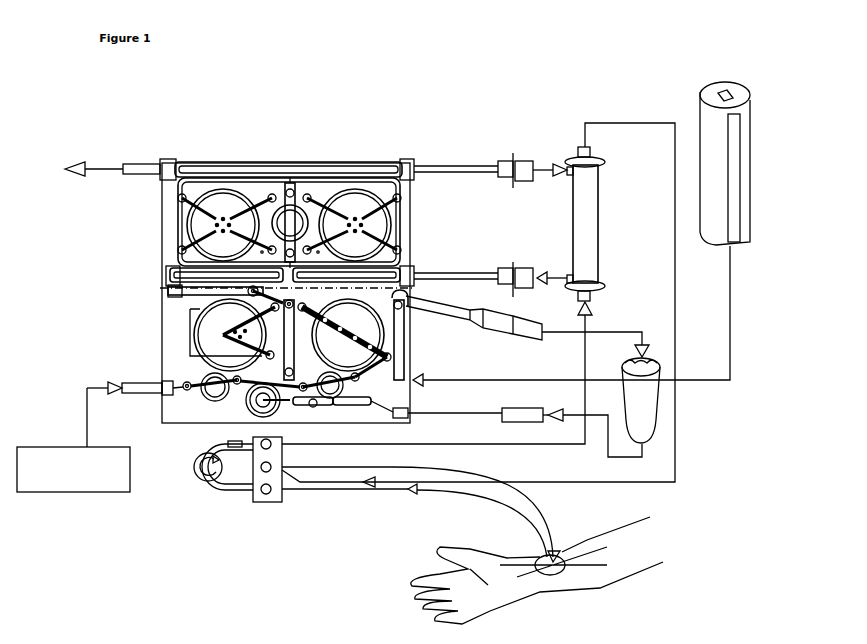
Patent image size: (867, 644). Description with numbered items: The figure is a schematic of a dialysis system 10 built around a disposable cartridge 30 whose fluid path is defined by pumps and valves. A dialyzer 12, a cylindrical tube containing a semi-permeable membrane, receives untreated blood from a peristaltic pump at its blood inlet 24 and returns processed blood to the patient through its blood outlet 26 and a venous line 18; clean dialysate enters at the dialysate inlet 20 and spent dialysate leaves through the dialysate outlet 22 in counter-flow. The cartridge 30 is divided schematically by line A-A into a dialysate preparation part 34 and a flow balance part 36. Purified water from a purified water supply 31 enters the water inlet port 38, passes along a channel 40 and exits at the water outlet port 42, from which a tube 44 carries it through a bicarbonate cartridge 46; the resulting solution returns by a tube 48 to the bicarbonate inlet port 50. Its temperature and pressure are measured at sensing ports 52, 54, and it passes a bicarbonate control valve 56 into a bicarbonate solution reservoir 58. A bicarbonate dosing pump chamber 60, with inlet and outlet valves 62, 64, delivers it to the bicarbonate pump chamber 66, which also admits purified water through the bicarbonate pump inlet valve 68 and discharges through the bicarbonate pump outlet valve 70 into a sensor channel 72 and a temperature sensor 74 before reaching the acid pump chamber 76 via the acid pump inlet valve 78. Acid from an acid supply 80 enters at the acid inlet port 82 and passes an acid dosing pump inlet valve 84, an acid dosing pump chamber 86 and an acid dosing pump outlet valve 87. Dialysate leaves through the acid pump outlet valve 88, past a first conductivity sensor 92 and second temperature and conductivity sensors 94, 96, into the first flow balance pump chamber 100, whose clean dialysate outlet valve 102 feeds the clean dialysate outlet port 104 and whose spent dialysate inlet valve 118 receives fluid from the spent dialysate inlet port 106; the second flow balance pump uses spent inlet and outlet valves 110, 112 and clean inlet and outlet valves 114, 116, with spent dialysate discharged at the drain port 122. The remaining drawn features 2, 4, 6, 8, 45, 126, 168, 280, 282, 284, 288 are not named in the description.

The patient arm 2 is at (537, 570).
The blood treatment system 4 is at (547, 444).
The blood pump 6 is at (203, 470).
The blood return line 8 is at (505, 500).
The dialysis system 10 is at (349, 165).
The dialyzer 12 is at (599, 250).
The venous line 18 is at (555, 506).
The dialysate solution inlet 20 is at (570, 173).
The dialysate solution outlet 22 is at (570, 275).
The blood inlet 24 is at (591, 297).
The blood outlet 26 is at (591, 152).
The cartridge 30 is at (162, 355).
The purified water supply 31 is at (745, 133).
The dialysate preparation part of the cartridge 34 is at (166, 402).
The flow balance part of the cartridge 36 is at (162, 219).
The water inlet port 38 is at (424, 380).
The channel 40 is at (404, 343).
The water outlet port 42 is at (406, 298).
The tube 44 is at (520, 320).
The column 45 is at (404, 322).
The bicarbonate cartridge 46 is at (657, 398).
The tube 48 is at (472, 412).
The bicarbonate inlet port 50 is at (410, 418).
The sensing port 52 is at (380, 412).
The sensing port 54 is at (330, 406).
The bicarbonate control valve 56 is at (296, 406).
The bicarbonate solution reservoir 58 is at (258, 417).
The bicarbonate dosing pump chamber 60 is at (404, 400).
The bicarbonate dosing pump inlet valve 62 is at (303, 384).
The bicarbonate dosing pump outlet valve 64 is at (404, 393).
The bicarbonate pump chamber 66 is at (386, 337).
The bicarbonate pump inlet valve 68 is at (404, 355).
The bicarbonate pump outlet valve 70 is at (302, 308).
The sensor channel 72 is at (289, 342).
The temperature sensor 74 is at (270, 437).
The acid pump chamber 76 is at (226, 340).
The acid pump inlet valve 78 is at (190, 351).
The acid supply 80 is at (70, 485).
The acid inlet port 82 is at (160, 386).
The acid dosing pump inlet valve 84 is at (408, 159).
The acid dosing pump chamber 86 is at (215, 401).
The acid dosing pump outlet valve 87 is at (235, 390).
The acid pump outlet valve 88 is at (200, 306).
The first dialysate solution conductivity sensor 92 is at (168, 292).
The second dialysate solution temperature sensor 94 is at (168, 284).
The second dialysate solution conductivity sensor 96 is at (172, 272).
The first flow balance pump chamber 100 is at (356, 198).
The clean dialysate solution outlet valve 102 is at (401, 199).
The clean dialysate solution outlet port 104 is at (401, 250).
The spent dialysate solution inlet port 106 is at (412, 280).
The spent dialysate solution inlet valve 110 is at (320, 258).
The spent dialysate solution outlet valve 112 is at (271, 194).
The clean dialysate solution inlet valve 114 is at (253, 258).
The clean dialysate solution outlet valve 116 is at (182, 199).
The spent dialysate solution inlet valve 118 is at (182, 250).
The drain port 122 is at (168, 159).
The ring 126 is at (294, 205).
The left diaphragm wheel 168 is at (228, 198).
The center column 280 is at (286, 190).
The lower pin 282 is at (304, 205).
The upper pin 284 is at (291, 188).
The pin 288 is at (297, 297).